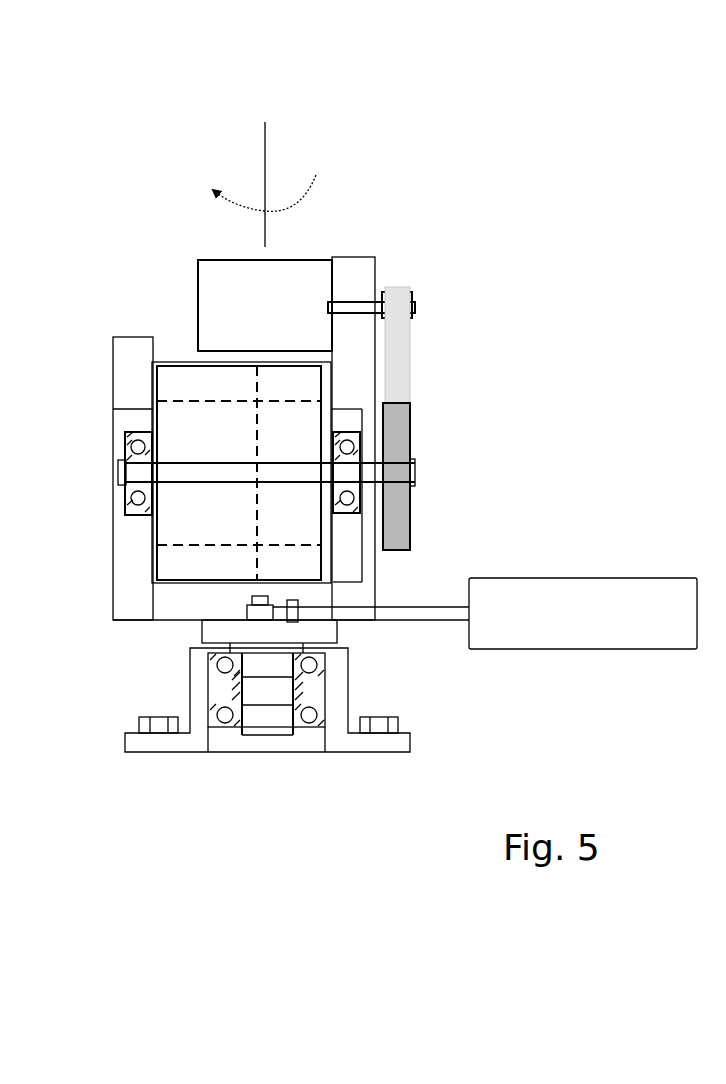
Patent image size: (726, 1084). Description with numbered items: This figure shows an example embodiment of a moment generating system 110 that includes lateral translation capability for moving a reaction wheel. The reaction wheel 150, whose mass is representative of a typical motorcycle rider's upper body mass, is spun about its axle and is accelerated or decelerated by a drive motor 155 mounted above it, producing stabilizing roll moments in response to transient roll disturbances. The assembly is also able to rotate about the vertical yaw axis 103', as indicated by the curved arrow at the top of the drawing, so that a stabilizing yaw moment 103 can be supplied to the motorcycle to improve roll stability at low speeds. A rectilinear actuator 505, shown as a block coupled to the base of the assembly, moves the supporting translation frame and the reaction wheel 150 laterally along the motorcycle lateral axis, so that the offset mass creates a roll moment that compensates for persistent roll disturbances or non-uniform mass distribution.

The moment generating system 110 is at (163, 80).
The yaw moment 103 is at (317, 182).
The yaw axis 103' is at (264, 149).
The drive motor 155 is at (284, 272).
The reaction wheel 150 is at (184, 372).
The rectilinear actuator 505 is at (522, 590).